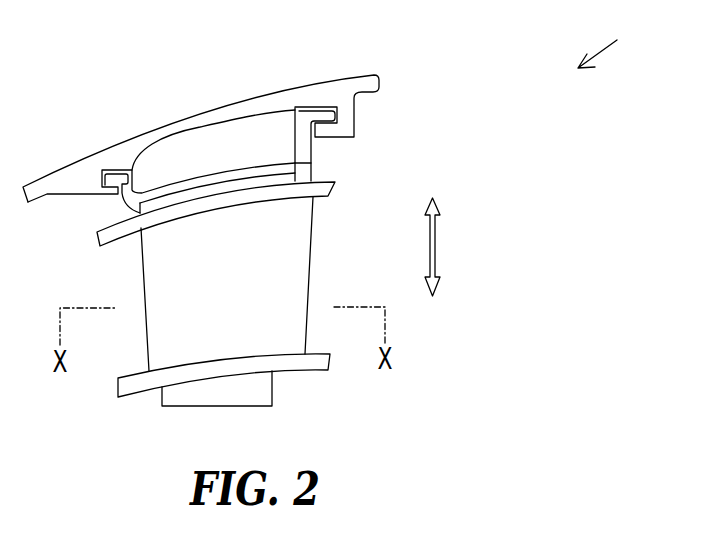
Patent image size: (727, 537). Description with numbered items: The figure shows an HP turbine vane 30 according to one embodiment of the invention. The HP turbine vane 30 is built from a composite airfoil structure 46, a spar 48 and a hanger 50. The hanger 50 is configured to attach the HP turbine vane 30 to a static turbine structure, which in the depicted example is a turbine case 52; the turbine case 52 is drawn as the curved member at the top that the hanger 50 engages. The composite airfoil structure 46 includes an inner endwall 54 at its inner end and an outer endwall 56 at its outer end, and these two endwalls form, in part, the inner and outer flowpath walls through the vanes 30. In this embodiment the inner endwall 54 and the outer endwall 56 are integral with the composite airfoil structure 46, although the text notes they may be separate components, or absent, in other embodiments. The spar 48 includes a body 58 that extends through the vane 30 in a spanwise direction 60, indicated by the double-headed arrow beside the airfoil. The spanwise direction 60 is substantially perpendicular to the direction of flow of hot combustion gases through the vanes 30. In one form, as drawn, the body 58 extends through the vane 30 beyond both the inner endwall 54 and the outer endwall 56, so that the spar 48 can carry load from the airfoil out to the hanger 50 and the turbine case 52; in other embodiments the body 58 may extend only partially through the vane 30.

The HP turbine vane 30 is at (611, 43).
The composite airfoil structure 46 is at (311, 248).
The spar 48 is at (313, 172).
The hanger 50 is at (313, 147).
The turbine case 52 is at (383, 82).
The inner endwall 54 is at (120, 378).
The outer endwall 56 is at (104, 250).
The body 58 is at (272, 382).
The spanwise direction 60 is at (435, 247).